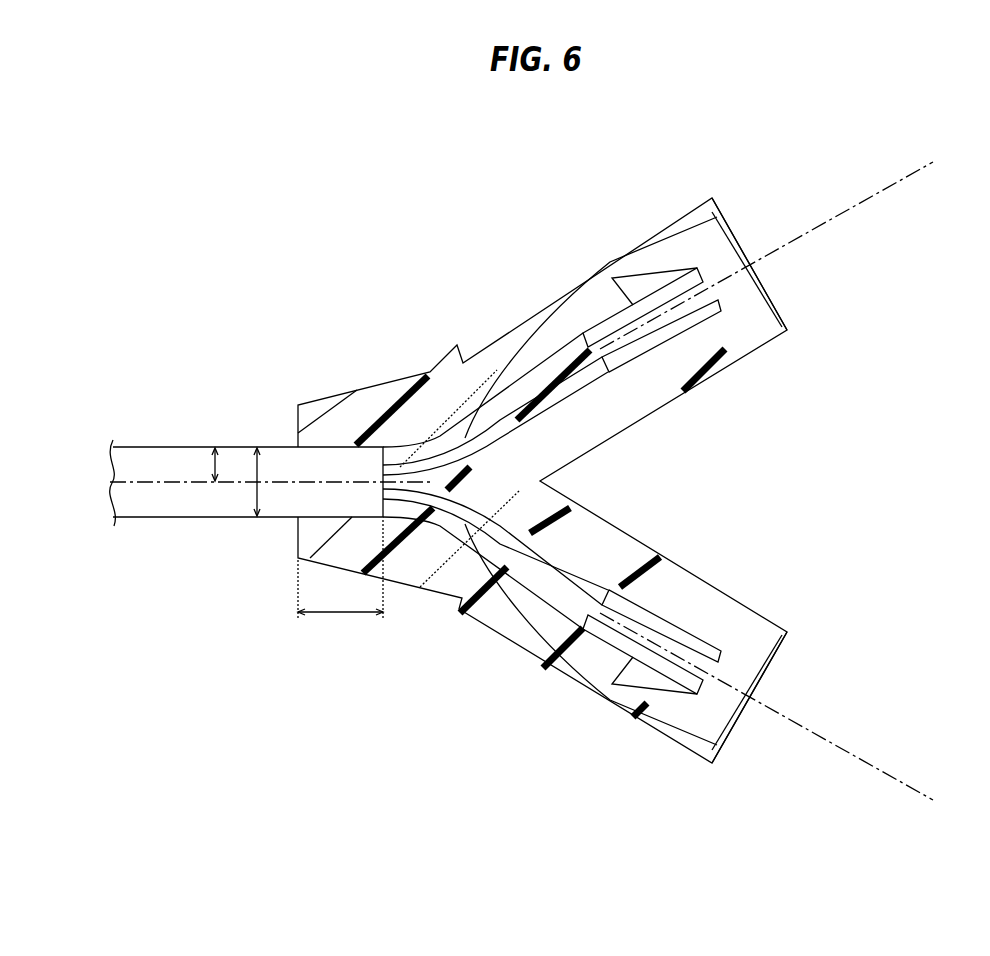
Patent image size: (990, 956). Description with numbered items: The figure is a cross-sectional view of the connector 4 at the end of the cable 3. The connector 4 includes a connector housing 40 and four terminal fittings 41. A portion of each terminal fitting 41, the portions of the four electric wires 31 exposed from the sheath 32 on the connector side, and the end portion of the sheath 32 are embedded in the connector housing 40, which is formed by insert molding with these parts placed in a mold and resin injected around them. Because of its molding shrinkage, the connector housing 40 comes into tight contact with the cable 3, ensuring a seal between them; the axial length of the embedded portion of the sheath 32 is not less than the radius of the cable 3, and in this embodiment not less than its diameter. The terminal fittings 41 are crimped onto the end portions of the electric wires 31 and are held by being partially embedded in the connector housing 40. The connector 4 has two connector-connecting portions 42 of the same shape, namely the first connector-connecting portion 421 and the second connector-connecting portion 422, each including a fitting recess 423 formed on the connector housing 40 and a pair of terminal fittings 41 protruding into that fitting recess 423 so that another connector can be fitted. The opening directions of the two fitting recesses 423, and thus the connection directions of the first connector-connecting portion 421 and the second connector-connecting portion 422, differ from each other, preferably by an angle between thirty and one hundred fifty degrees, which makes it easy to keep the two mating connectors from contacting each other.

The cable 3 is at (127, 446).
The sheath 32 is at (166, 462).
The connector 4 is at (330, 402).
The connector housing 40 is at (375, 400).
The electric wires 31 is at (522, 432).
The terminal fittings 41 is at (667, 332).
The connector-connecting portions 42 is at (785, 483).
The first connector-connecting portion 421 is at (748, 199).
The second connector-connecting portion 422 is at (747, 765).
The fitting recess 423 is at (739, 324).